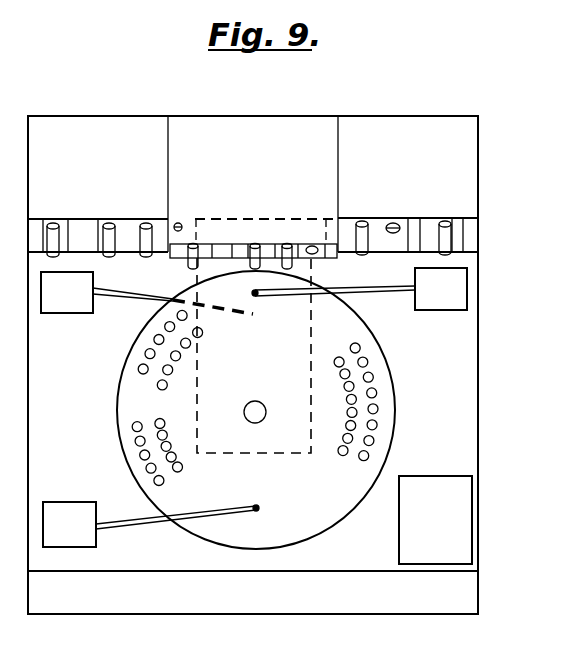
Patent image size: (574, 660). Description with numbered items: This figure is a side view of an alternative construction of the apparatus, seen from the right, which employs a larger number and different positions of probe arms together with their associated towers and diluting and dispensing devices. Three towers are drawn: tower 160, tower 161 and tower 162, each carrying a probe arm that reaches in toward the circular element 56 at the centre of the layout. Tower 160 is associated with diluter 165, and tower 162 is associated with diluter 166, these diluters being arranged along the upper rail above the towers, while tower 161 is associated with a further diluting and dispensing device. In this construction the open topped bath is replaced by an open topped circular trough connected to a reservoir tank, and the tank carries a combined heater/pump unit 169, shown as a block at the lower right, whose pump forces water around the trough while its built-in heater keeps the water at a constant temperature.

The rotating disc 56 is at (384, 458).
The tower 160 is at (458, 288).
The tower 161 is at (62, 512).
The tower 162 is at (80, 303).
The diluter 165 is at (380, 227).
The diluter 166 is at (273, 252).
The combined heater/pump unit 169 is at (432, 482).